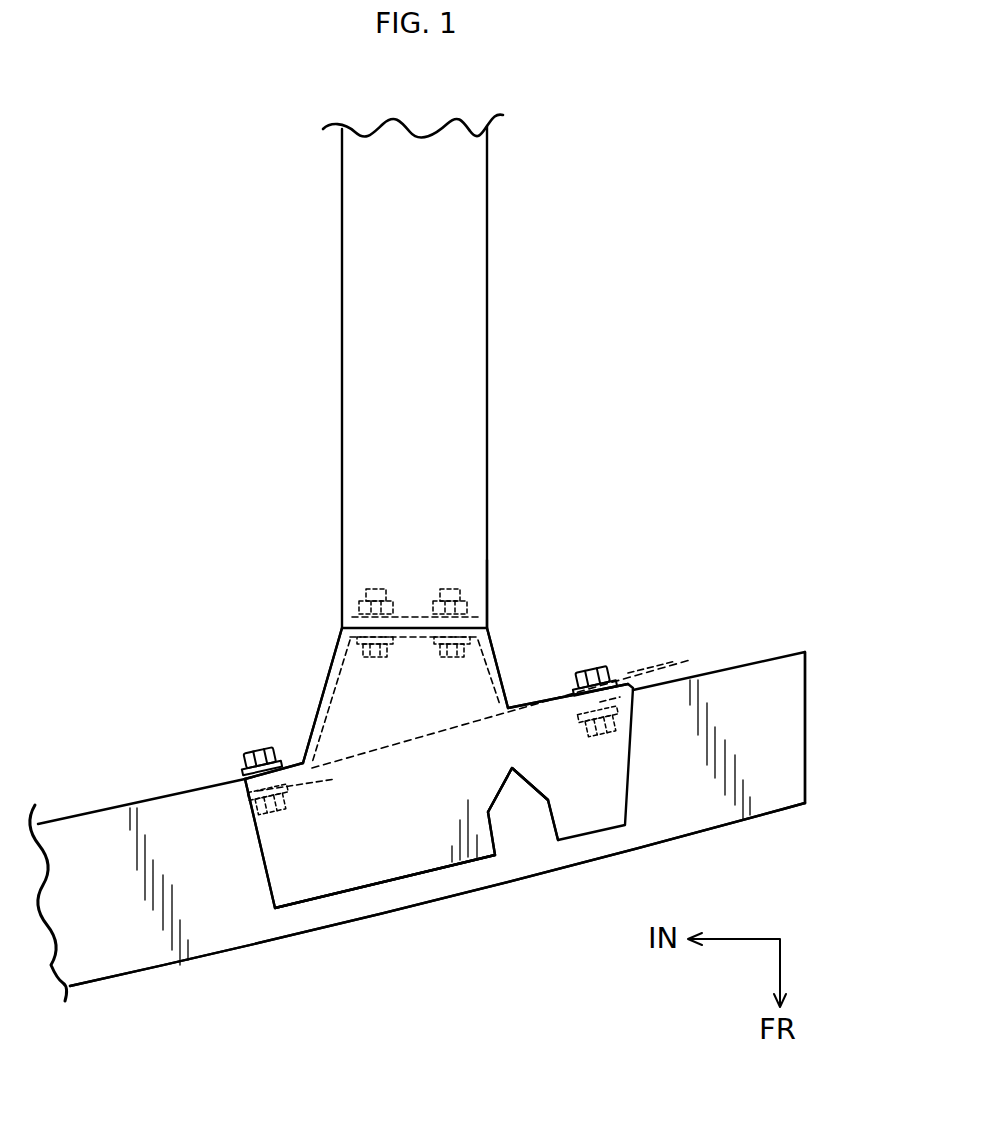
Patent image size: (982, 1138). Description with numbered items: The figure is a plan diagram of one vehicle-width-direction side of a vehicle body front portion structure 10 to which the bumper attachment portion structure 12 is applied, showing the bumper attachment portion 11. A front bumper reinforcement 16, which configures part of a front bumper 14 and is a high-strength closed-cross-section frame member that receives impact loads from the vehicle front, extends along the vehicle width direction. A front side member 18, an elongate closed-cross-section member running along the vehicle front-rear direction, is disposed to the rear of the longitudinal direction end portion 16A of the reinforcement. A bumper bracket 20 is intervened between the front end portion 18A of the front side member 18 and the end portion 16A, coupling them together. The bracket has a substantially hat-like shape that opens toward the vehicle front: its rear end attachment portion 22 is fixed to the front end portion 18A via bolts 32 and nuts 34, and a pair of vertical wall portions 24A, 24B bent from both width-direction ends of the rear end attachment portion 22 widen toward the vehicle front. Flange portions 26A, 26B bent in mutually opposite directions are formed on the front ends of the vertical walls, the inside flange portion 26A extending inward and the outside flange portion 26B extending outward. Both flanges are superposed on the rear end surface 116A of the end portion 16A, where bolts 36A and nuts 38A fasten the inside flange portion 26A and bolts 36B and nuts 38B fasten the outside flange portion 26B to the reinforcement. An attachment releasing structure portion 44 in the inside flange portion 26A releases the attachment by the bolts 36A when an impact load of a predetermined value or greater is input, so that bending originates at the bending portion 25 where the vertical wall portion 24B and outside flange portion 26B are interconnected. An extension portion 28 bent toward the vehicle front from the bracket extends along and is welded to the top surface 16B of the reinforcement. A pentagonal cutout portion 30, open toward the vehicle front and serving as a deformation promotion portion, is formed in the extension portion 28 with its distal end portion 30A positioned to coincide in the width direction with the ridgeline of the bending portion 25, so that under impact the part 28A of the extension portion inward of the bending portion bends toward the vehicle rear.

The vehicle body front portion structure 10 is at (690, 285).
The bumper attachment portion 11 is at (715, 522).
The bumper attachment portion structure 12 is at (705, 472).
The front bumper 14 is at (447, 975).
The front bumper reinforcement 16 is at (748, 822).
The longitudinal direction end portion 16A is at (684, 838).
The top surface 16B is at (795, 726).
The front side member 18 is at (490, 299).
The front end portion 18A is at (487, 620).
The bumper bracket 20 is at (315, 628).
The rear end attachment portion 22 is at (413, 628).
The vertical wall portion 24A is at (333, 658).
The vertical wall portion 24B is at (496, 650).
The bending portion 25 is at (503, 707).
The flange portion 26A is at (250, 750).
The flange portion 26B is at (550, 702).
The extension portion 28 is at (403, 842).
The part of extension portion 28A is at (444, 832).
The cutout portion 30 is at (503, 848).
The distal end portion 30A is at (512, 772).
The bolt 32 is at (371, 658).
The nut 34 is at (358, 597).
The bolt 36A is at (260, 748).
The bolt 36B is at (597, 668).
The nut 38A is at (300, 814).
The nut 38B is at (583, 732).
The attachment releasing structure portion 44 is at (207, 752).
The rear end surface 116A is at (628, 674).